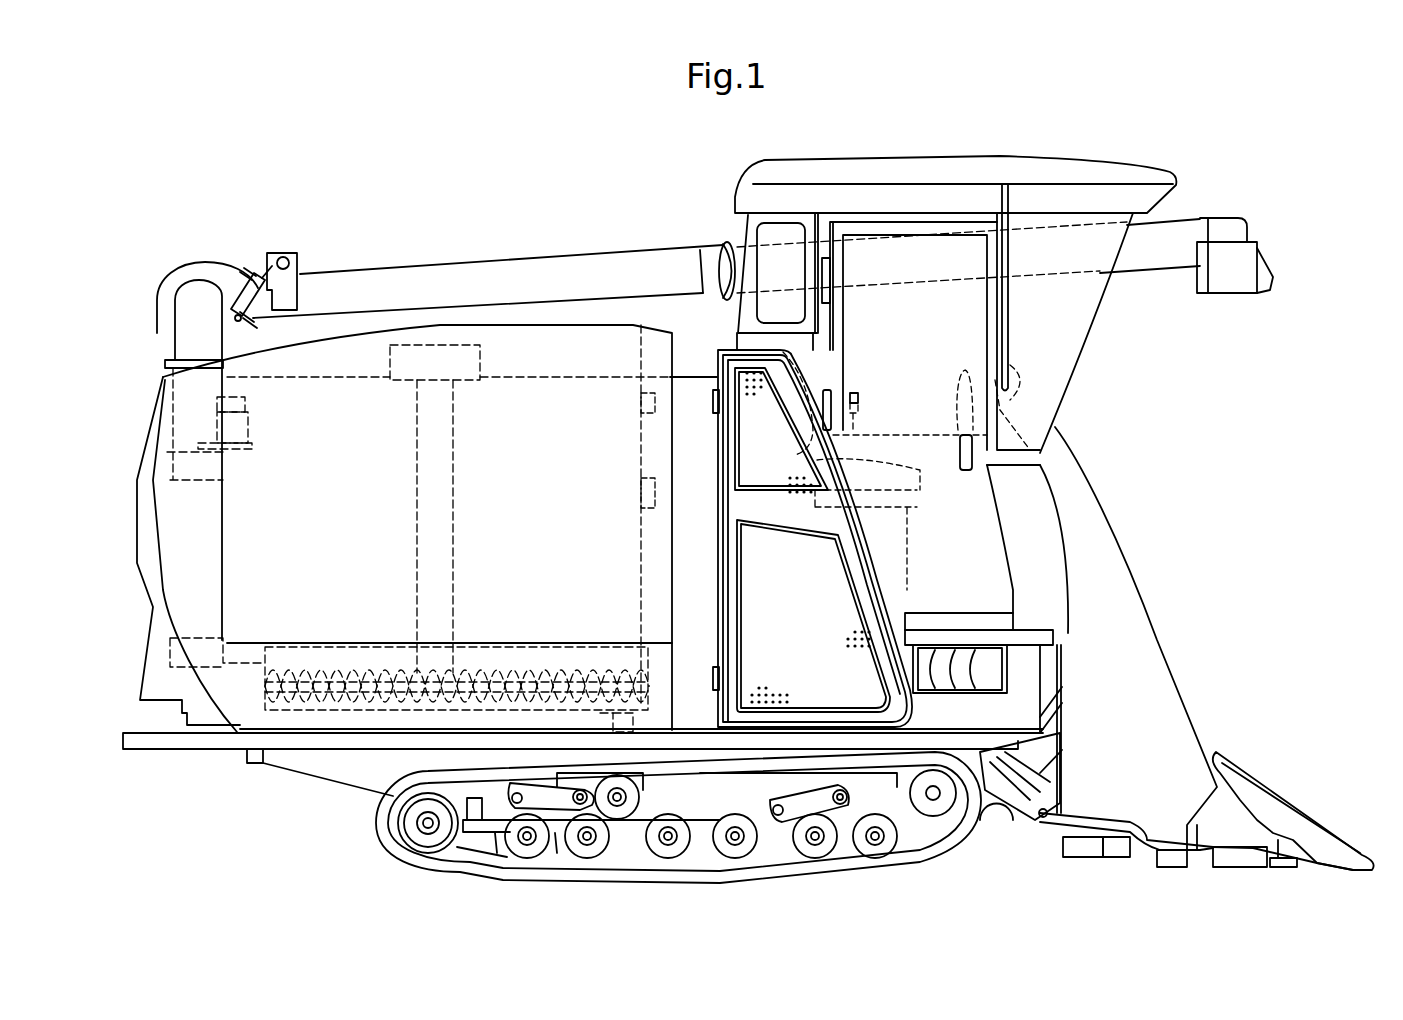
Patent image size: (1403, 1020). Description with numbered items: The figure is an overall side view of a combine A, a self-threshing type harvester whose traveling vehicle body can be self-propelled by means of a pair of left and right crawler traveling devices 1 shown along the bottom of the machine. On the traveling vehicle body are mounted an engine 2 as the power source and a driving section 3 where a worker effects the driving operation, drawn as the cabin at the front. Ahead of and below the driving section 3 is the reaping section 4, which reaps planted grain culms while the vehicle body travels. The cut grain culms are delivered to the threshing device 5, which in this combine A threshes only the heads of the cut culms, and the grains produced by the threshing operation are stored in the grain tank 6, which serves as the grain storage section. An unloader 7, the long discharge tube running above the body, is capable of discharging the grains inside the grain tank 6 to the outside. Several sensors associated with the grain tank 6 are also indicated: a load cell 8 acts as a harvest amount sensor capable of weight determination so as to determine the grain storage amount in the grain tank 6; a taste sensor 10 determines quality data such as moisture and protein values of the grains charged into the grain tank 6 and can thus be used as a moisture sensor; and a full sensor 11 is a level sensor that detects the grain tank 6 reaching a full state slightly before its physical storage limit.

The crawler traveling device 1 is at (925, 843).
The engine 2 is at (752, 566).
The driving section 3 is at (1087, 128).
The reaping section 4 is at (1192, 594).
The threshing device 5 is at (547, 377).
The grain tank 6 is at (363, 342).
The unloader 7 is at (465, 266).
The load cell 8 is at (635, 722).
The taste sensor 10 is at (657, 488).
The full sensor 11 is at (657, 402).
The combine A is at (1296, 117).